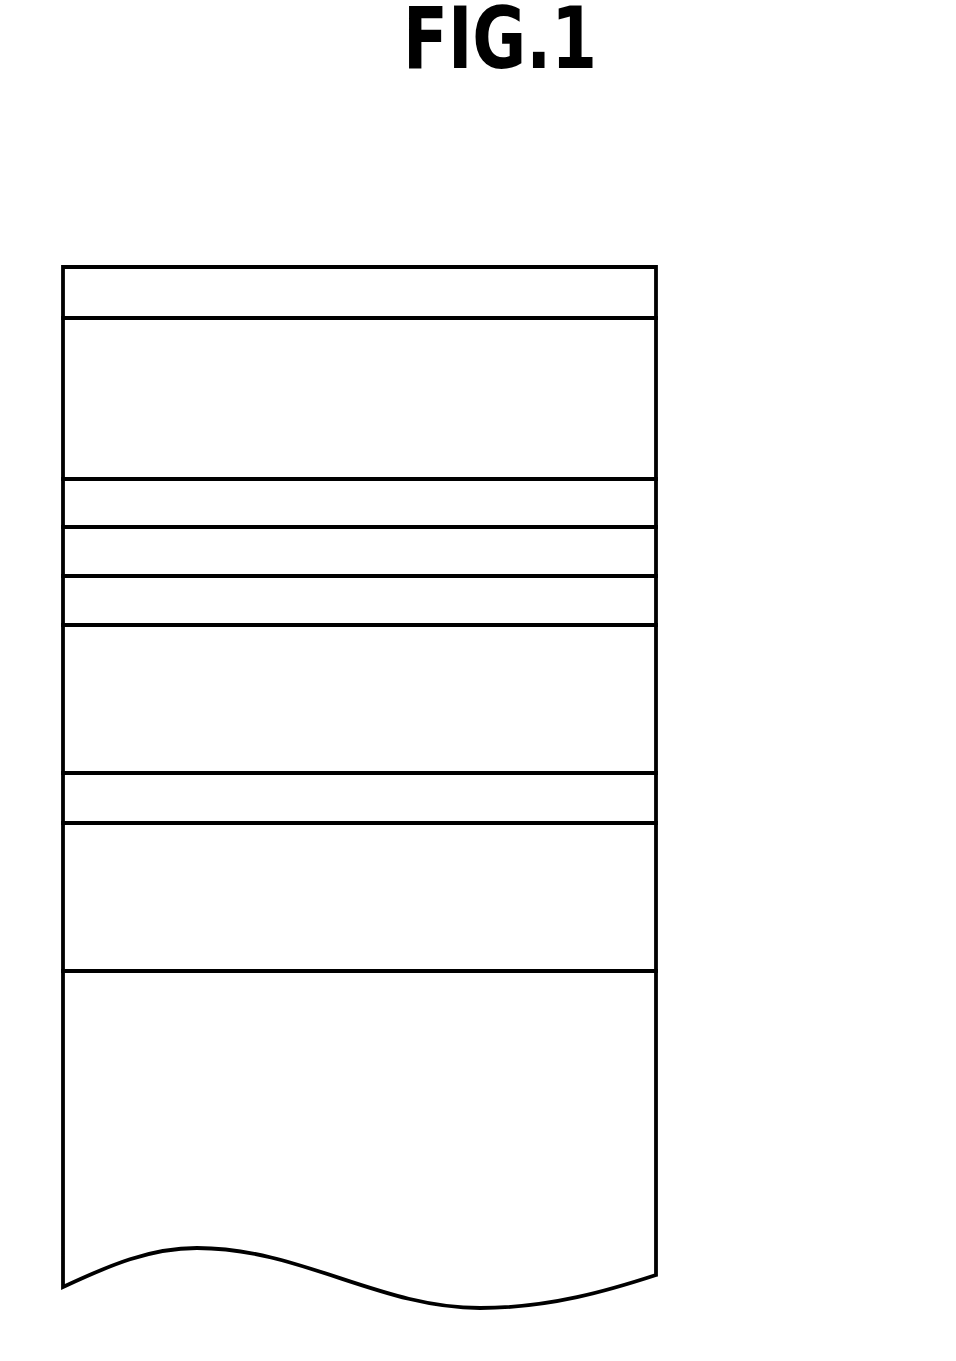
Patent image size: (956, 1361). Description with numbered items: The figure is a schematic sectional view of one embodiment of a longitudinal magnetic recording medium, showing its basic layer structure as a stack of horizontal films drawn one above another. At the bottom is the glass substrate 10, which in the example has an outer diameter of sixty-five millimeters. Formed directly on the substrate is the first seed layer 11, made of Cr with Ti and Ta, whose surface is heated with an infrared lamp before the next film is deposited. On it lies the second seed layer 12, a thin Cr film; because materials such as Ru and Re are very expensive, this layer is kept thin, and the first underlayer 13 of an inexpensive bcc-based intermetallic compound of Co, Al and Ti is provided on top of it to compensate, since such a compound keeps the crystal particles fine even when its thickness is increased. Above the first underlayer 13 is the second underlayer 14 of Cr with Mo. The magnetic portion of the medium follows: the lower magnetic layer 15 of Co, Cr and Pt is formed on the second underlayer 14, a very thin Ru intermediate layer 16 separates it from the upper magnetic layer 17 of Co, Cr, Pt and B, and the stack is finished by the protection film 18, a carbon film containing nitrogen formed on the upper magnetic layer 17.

The glass substrate 10 is at (568, 1115).
The first seed layer 11 is at (568, 895).
The second seed layer 12 is at (568, 802).
The first underlayer 13 is at (568, 702).
The second underlayer 14 is at (568, 600).
The lower magnetic layer 15 is at (568, 550).
The intermediate layer 16 is at (568, 502).
The upper magnetic layer 17 is at (568, 395).
The protection film 18 is at (568, 292).